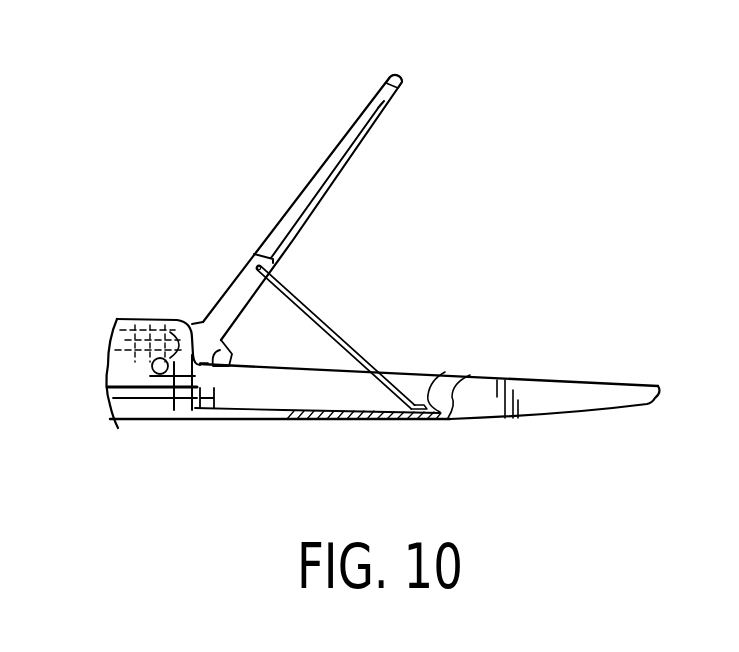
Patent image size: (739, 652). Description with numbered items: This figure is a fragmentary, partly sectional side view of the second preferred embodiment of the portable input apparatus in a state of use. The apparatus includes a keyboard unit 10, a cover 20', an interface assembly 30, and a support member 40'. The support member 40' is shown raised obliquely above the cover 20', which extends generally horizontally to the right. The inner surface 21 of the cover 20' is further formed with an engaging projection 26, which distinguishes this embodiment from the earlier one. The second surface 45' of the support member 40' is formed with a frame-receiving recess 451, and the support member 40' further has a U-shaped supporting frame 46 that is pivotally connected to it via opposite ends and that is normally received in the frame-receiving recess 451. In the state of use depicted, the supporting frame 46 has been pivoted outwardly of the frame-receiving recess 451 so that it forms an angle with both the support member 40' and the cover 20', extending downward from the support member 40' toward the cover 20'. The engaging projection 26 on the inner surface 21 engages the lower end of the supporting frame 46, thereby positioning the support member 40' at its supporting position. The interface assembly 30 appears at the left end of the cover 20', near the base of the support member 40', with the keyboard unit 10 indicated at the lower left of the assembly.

The keyboard unit 10 is at (138, 432).
The cover 20' is at (553, 434).
The inner surface 21 is at (597, 385).
The engaging projection 26 is at (445, 372).
The interface assembly 30 is at (137, 307).
The support member 40' is at (302, 198).
The second surface 45' is at (475, 106).
The frame-receiving recess 451 is at (326, 180).
The supporting frame 46 is at (323, 322).